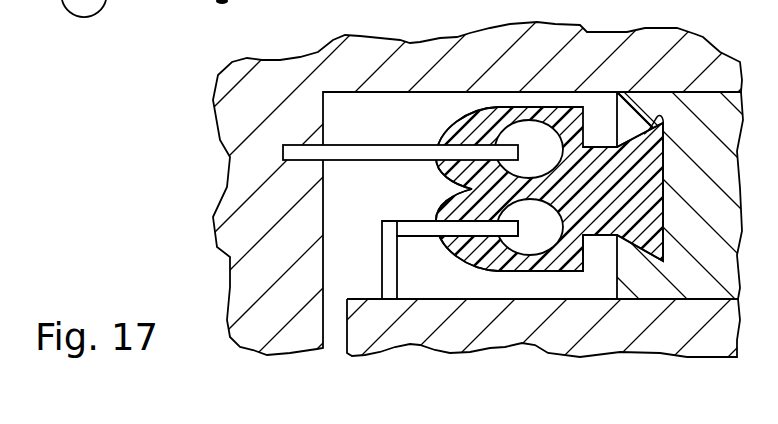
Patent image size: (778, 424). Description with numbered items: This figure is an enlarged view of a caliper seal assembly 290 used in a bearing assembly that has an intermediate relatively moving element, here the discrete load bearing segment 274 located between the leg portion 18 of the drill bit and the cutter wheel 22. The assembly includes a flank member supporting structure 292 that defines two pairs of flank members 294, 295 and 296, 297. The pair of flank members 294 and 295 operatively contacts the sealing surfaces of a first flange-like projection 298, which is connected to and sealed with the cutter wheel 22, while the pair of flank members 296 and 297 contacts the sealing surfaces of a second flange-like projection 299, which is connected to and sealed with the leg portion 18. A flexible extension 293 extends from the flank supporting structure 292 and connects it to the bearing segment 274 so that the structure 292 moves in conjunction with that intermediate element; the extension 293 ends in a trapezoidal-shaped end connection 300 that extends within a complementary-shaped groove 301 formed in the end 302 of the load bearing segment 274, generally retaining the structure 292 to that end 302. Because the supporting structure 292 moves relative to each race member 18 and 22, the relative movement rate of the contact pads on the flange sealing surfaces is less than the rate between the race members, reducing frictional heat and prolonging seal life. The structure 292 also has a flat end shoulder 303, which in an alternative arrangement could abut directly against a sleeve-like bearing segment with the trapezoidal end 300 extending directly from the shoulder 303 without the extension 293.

The leg portion 18 is at (272, 101).
The cutter wheel 22 is at (708, 337).
The load bearing segment 274 is at (721, 282).
The caliper seal assembly 290 is at (455, 96).
The flank member supporting structure 292 is at (547, 112).
The flexible extension 293 is at (603, 220).
The flank member 294 is at (463, 252).
The flank member 295 is at (452, 213).
The flank member 296 is at (446, 163).
The flank member 297 is at (487, 112).
The first flange-like projection 298 is at (387, 232).
The second flange-like projection 299 is at (390, 146).
The trapezoidal-shaped end connection 300 is at (645, 173).
The complementary-shaped groove 301 is at (657, 122).
The end of load bearing segment 302 is at (617, 92).
The flat end shoulder 303 is at (583, 270).